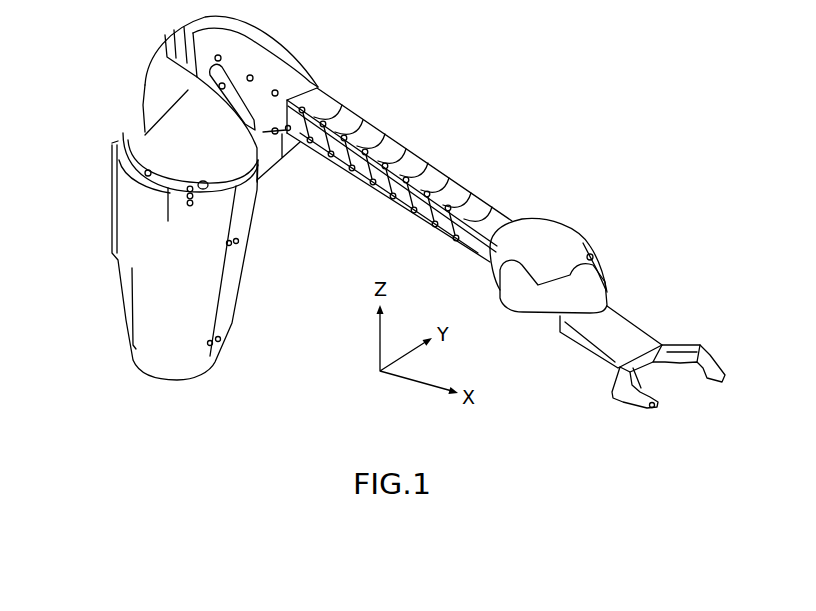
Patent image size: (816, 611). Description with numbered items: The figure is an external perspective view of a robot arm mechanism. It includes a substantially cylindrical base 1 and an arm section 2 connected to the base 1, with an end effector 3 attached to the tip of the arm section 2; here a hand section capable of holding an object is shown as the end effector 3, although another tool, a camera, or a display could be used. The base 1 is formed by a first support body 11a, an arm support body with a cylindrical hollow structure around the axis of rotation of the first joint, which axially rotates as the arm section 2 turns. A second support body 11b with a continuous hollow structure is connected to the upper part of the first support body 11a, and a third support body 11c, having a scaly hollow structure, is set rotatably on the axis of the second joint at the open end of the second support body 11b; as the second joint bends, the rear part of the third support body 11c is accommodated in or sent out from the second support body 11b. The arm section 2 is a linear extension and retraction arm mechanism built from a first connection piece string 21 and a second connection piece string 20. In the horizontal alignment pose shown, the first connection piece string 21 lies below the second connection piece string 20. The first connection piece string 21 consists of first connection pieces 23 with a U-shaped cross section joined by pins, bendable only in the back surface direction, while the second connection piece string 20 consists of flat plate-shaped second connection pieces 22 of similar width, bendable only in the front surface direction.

The base 1 is at (106, 292).
The arm section 2 is at (343, 67).
The end effector 3 is at (638, 309).
The first support body 11a is at (112, 215).
The second support body 11b is at (145, 83).
The third support body 11c is at (276, 42).
The second connection piece string 20 is at (453, 165).
The first connection piece string 21 is at (375, 201).
The second connection piece 22 is at (380, 132).
The first connection piece 23 is at (342, 168).